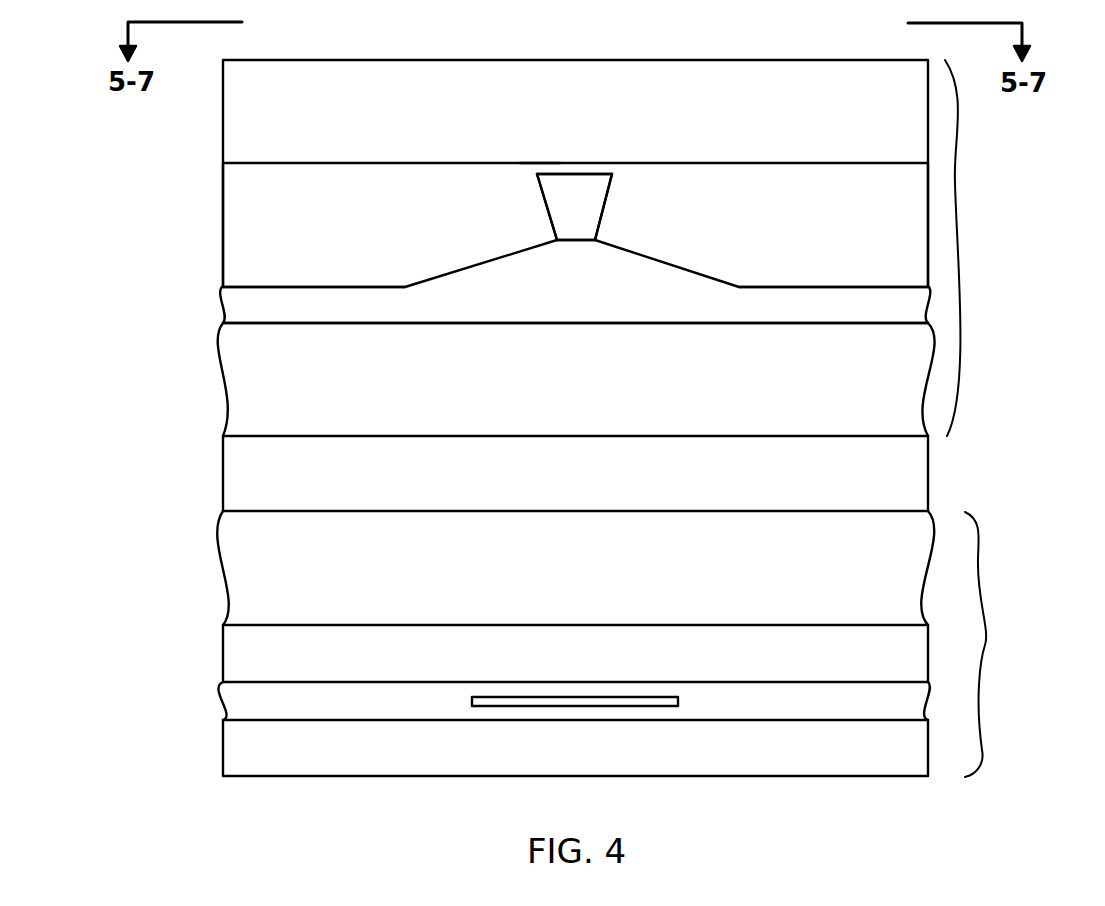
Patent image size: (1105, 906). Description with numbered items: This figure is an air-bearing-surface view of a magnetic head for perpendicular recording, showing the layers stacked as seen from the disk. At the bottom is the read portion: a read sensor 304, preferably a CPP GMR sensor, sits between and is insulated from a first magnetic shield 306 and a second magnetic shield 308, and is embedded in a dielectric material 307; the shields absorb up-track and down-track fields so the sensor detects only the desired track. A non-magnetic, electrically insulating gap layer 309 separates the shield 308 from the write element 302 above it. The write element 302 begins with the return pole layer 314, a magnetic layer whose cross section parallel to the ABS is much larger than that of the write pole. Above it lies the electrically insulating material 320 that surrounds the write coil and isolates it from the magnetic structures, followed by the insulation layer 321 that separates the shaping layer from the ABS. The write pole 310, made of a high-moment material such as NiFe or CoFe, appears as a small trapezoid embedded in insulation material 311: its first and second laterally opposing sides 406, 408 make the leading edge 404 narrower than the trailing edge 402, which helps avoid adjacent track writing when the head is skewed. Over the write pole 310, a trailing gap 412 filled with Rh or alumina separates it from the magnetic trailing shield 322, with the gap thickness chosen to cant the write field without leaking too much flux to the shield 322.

The write element 302 is at (955, 183).
The read sensor 304 is at (472, 700).
The first magnetic shield 306 is at (523, 745).
The dielectric material 307 is at (818, 702).
The second magnetic shield 308 is at (527, 652).
The gap layer 309 is at (527, 570).
The write pole 310 is at (575, 217).
The insulation material 311 is at (330, 207).
The return pole layer 314 is at (523, 470).
The electrically insulating material 320 is at (525, 382).
The insulation layer 321 is at (715, 303).
The trailing shield 322 is at (820, 99).
The trailing edge 402 is at (583, 174).
The leading edge 404 is at (566, 242).
The first laterally opposing side 406 is at (609, 207).
The second laterally opposing side 408 is at (545, 210).
The trailing gap 412 is at (557, 172).